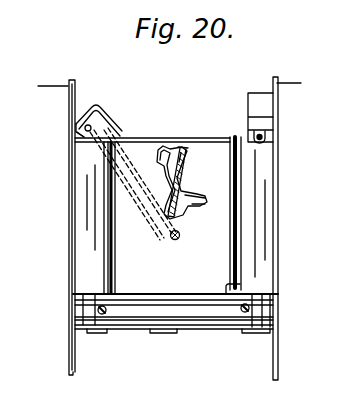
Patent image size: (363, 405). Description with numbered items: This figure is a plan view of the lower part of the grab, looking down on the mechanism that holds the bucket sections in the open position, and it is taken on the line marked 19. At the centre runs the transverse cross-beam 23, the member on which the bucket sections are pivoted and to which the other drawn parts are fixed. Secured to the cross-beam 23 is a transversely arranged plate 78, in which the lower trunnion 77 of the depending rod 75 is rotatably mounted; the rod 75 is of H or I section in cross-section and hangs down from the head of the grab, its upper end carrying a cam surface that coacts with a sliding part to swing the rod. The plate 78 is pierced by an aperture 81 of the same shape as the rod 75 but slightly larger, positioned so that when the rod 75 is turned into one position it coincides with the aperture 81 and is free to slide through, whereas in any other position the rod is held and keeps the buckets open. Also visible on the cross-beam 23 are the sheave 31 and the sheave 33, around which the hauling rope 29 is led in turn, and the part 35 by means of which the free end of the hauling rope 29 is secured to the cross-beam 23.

The section line 19 is at (68, 86).
The transverse cross-beam 23 is at (69, 210).
The hauling rope 29 is at (176, 242).
The sheave 31 is at (99, 118).
The sheave 33 is at (233, 307).
The securing part 35 is at (278, 132).
The depending rod 75 is at (181, 168).
The lower trunnion 77 is at (183, 172).
The transverse plate 78 is at (218, 238).
The aperture 81 is at (153, 151).